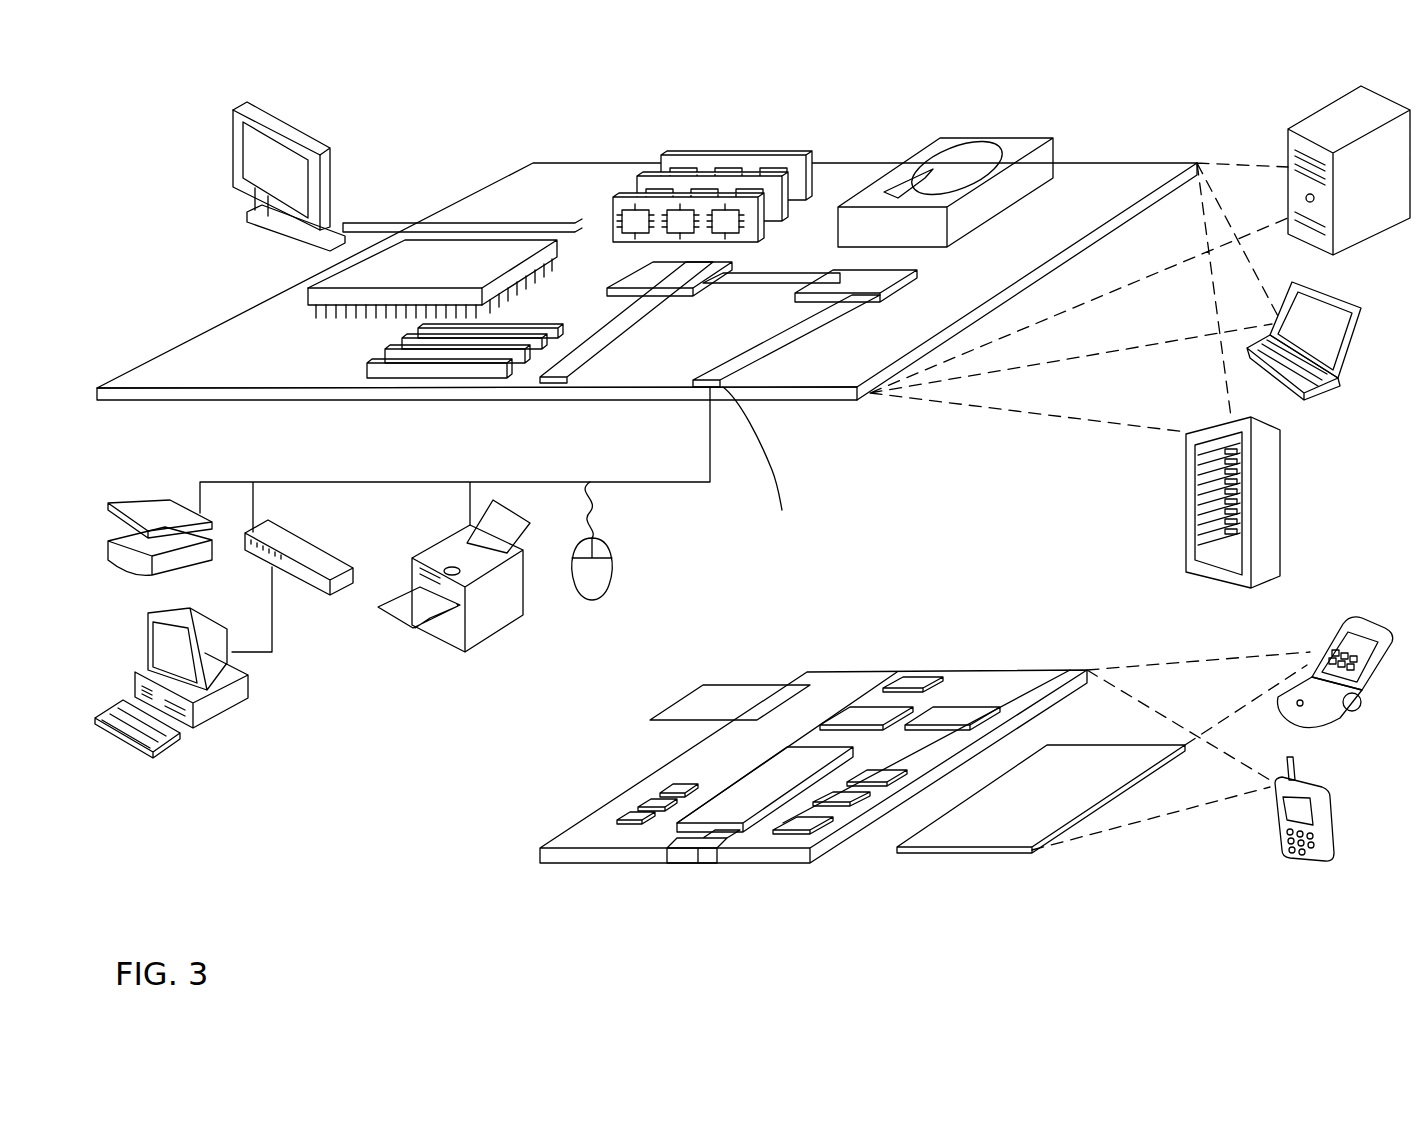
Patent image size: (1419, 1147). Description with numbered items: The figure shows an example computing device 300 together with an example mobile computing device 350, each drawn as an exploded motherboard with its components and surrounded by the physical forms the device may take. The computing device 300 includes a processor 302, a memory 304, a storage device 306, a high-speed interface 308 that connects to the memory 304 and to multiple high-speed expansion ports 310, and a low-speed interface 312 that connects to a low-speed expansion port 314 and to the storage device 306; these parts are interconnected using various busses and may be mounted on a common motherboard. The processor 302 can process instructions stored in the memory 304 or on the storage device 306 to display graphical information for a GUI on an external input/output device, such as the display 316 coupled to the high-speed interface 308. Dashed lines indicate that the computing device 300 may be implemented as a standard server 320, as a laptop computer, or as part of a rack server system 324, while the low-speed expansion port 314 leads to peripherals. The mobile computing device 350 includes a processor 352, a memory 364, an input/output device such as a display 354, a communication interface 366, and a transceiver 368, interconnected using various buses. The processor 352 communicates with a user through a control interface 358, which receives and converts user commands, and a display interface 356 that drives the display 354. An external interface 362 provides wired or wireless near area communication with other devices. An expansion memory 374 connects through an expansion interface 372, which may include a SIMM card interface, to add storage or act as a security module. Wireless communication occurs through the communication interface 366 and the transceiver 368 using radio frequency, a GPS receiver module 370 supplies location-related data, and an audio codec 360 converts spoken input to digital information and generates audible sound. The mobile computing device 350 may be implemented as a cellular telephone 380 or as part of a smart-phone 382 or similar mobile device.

The computing device 300 is at (451, 135).
The processor 302 is at (315, 296).
The memory 304 is at (670, 178).
The storage device 306 is at (940, 152).
The high-speed interface 308 is at (632, 282).
The high-speed expansion ports 310 is at (380, 362).
The low-speed interface 312 is at (832, 282).
The low-speed expansion port 314 is at (775, 457).
The display 316 is at (240, 108).
The standard server 320 is at (1290, 147).
The rack server system 324 is at (1188, 521).
The mobile computing device 350 is at (515, 858).
The processor 352 is at (735, 813).
The display 354 is at (1000, 833).
The display interface 356 is at (815, 826).
The control interface 358 is at (852, 796).
The audio codec 360 is at (877, 774).
The external interface 362 is at (698, 849).
The memory 364 is at (655, 803).
The communication interface 366 is at (868, 706).
The transceiver 368 is at (953, 706).
The GPS receiver module 370 is at (916, 677).
The expansion interface 372 is at (788, 685).
The expansion memory 374 is at (703, 685).
The cellular telephone 380 is at (1340, 590).
The mobile phone 382 is at (1275, 813).